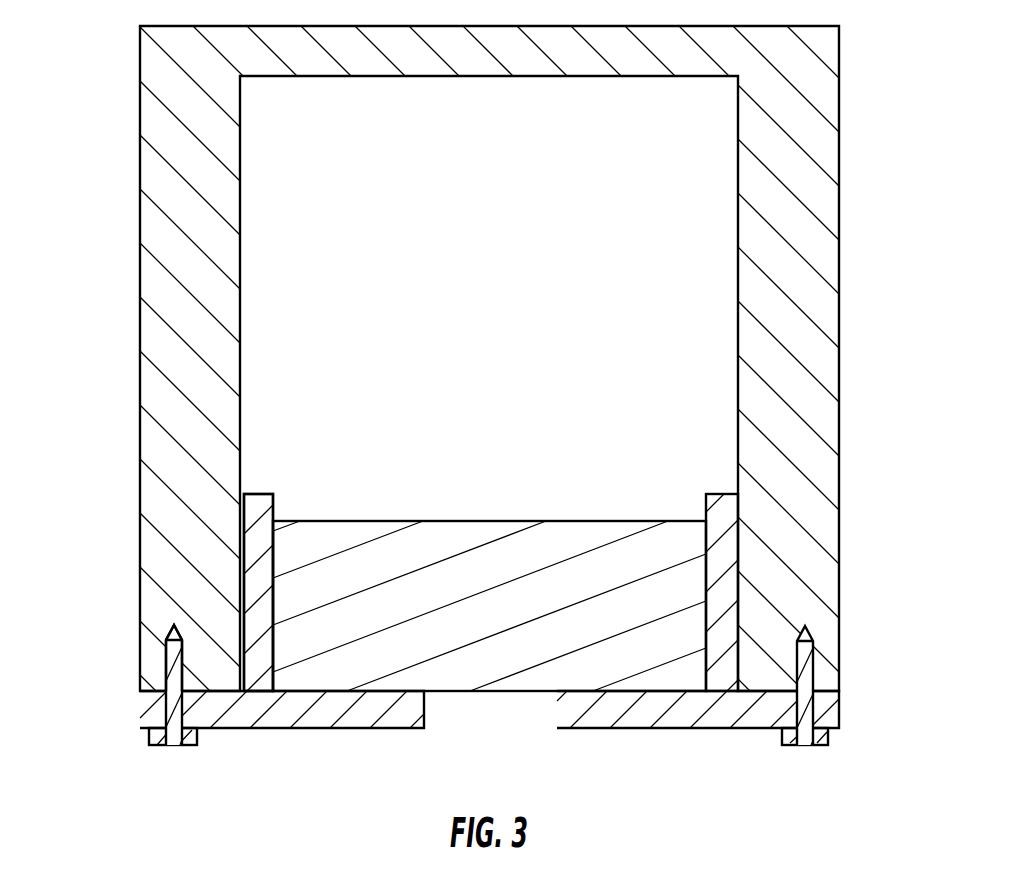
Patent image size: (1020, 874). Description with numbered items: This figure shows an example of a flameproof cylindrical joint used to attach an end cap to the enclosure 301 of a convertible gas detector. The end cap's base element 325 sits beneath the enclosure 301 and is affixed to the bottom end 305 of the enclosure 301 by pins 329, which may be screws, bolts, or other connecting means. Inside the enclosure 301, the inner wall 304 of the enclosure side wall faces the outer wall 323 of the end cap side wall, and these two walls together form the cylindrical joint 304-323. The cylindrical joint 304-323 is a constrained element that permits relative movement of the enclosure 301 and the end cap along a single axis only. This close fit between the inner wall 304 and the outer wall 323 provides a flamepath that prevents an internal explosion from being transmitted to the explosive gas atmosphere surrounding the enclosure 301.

The enclosure 301 is at (140, 279).
The inner wall 304 is at (740, 558).
The outer wall 323 is at (740, 613).
The cylindrical joint 304-323 is at (244, 569).
The bottom end 305 is at (165, 691).
The base element 325 is at (267, 727).
The pins 329 is at (167, 745).